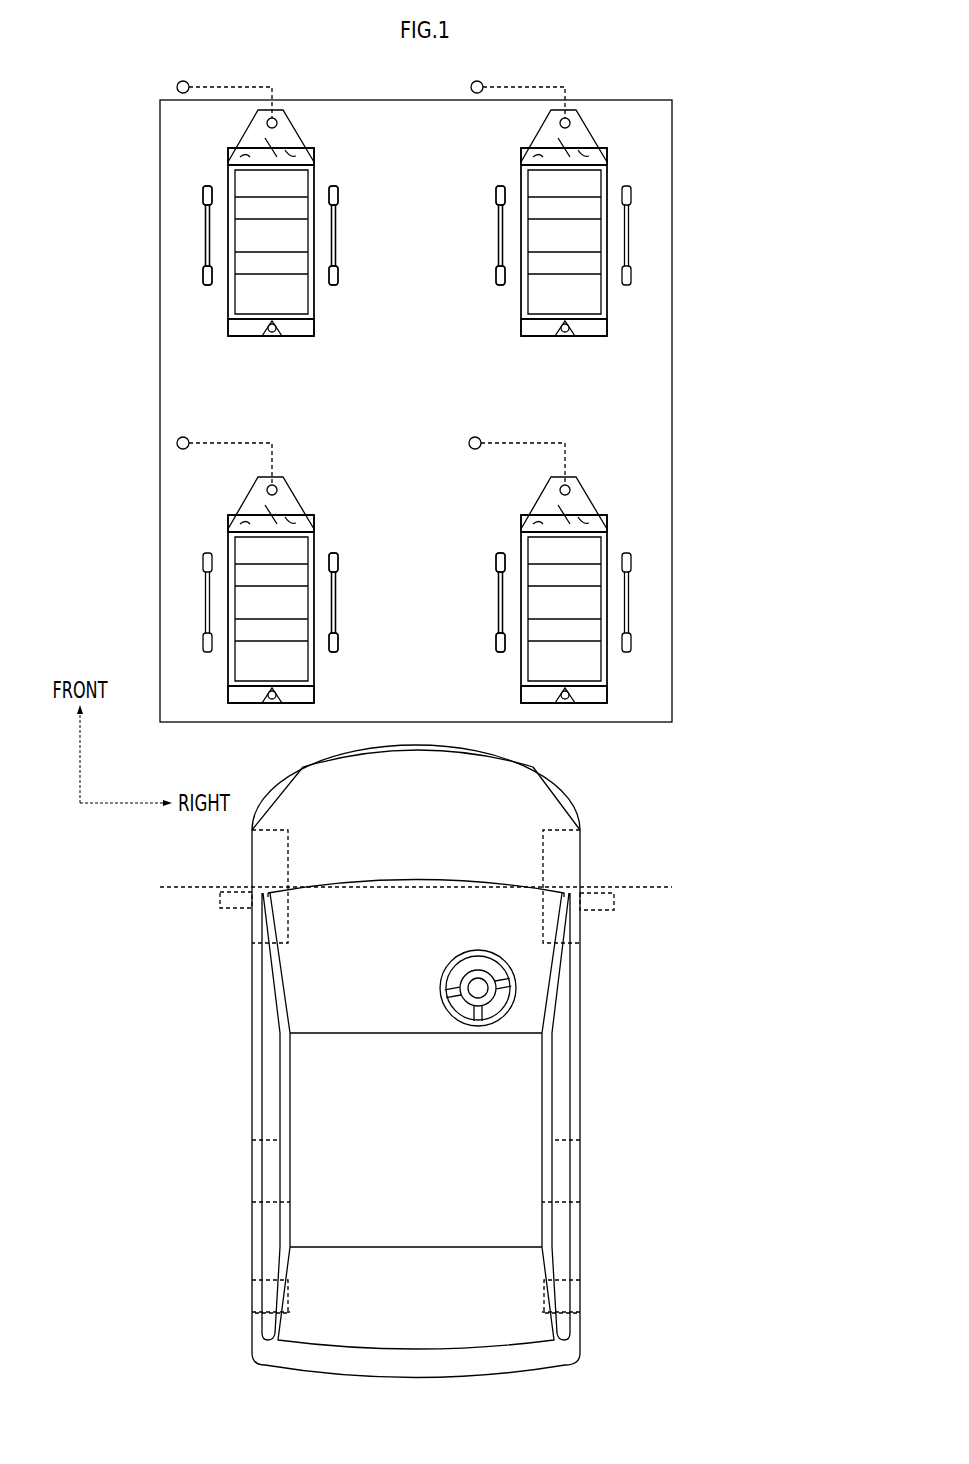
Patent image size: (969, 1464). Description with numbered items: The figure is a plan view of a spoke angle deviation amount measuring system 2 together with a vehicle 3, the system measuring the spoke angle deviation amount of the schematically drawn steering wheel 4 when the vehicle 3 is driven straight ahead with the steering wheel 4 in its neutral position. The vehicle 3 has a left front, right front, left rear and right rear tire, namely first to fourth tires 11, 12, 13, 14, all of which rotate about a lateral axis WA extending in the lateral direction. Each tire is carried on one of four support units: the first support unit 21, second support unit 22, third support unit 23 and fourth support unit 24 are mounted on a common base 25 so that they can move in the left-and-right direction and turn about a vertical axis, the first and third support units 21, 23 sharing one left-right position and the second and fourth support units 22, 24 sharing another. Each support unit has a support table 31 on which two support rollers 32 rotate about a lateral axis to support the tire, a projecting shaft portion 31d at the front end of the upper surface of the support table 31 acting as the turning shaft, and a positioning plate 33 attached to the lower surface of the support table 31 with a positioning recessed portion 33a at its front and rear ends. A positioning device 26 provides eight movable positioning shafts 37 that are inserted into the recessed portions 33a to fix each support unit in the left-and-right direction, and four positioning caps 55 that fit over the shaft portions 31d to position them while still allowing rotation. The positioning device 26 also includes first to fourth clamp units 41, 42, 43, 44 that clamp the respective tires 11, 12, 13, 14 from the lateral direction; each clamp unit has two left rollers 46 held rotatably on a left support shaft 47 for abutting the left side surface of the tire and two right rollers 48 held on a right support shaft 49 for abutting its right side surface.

The spoke angle deviation amount measuring system 2 is at (466, 411).
The vehicle 3 is at (570, 792).
The steering wheel 4 is at (514, 984).
The first tire 11 is at (290, 856).
The second tire 12 is at (543, 856).
The third tire 13 is at (290, 1290).
The fourth tire 14 is at (542, 1290).
The first support unit 21 is at (312, 134).
The second support unit 22 is at (605, 134).
The third support unit 23 is at (310, 501).
The fourth support unit 24 is at (603, 501).
The base 25 is at (673, 350).
The positioning device 26 is at (192, 252).
The support table 31 is at (252, 126).
The projecting shaft portion 31d is at (282, 132).
The support roller 32 is at (258, 195).
The positioning plate 33 is at (230, 326).
The positioning recessed portion 33a is at (318, 156).
The positioning shaft 37 is at (260, 147).
The first clamp unit 41 is at (340, 241).
The second clamp unit 42 is at (488, 236).
The third clamp unit 43 is at (340, 607).
The fourth clamp unit 44 is at (490, 610).
The left roller 46 is at (203, 194).
The left support shaft 47 is at (205, 232).
The right roller 48 is at (340, 194).
The right support shaft 49 is at (338, 250).
The positioning cap 55 is at (177, 87).
The lateral axis WA is at (655, 886).